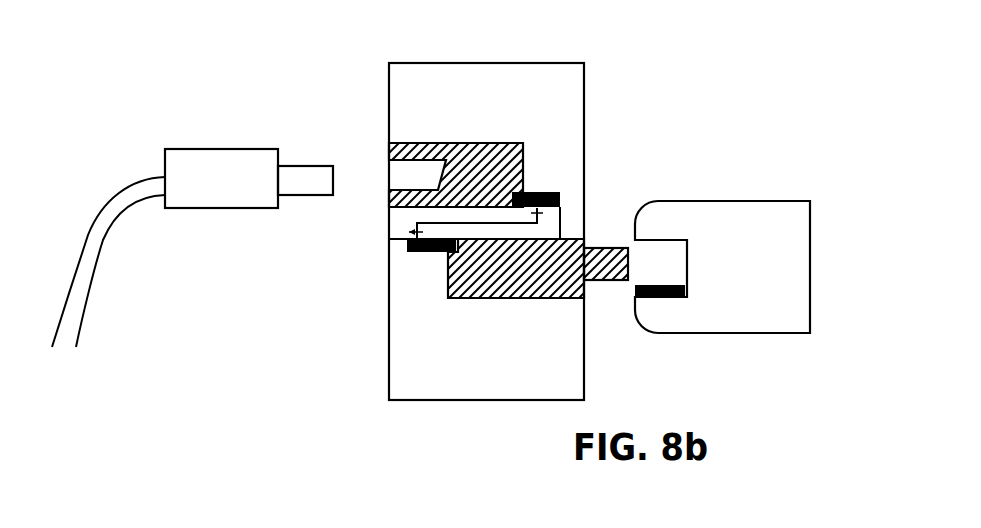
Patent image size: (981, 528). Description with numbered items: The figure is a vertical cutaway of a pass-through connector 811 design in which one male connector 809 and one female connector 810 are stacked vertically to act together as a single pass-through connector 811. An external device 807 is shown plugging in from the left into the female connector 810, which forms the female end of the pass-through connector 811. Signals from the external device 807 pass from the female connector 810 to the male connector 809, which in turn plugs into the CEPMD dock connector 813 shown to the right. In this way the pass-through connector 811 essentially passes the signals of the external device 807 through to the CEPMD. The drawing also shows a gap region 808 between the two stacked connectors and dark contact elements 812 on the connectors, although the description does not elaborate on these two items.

The external device 807 is at (241, 139).
The gap / receiving space 808 is at (382, 218).
The male connector 809 is at (538, 306).
The female connector 810 is at (507, 134).
The pass-through connector 811 is at (498, 76).
The contact strips 812 is at (548, 221).
The CEPMD dock connector 813 is at (751, 308).